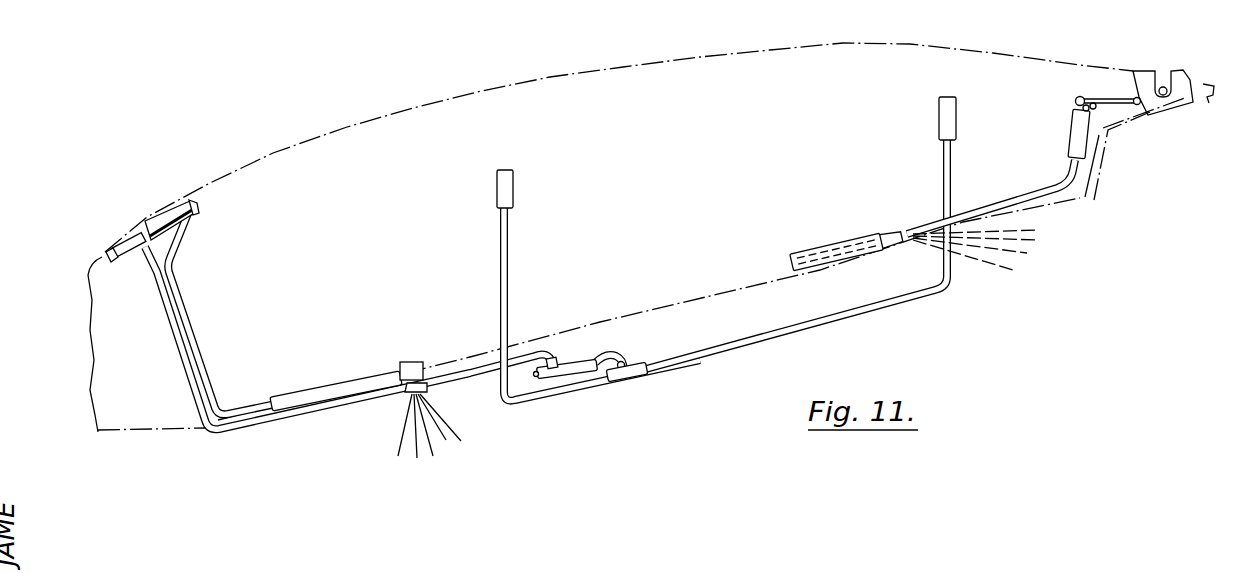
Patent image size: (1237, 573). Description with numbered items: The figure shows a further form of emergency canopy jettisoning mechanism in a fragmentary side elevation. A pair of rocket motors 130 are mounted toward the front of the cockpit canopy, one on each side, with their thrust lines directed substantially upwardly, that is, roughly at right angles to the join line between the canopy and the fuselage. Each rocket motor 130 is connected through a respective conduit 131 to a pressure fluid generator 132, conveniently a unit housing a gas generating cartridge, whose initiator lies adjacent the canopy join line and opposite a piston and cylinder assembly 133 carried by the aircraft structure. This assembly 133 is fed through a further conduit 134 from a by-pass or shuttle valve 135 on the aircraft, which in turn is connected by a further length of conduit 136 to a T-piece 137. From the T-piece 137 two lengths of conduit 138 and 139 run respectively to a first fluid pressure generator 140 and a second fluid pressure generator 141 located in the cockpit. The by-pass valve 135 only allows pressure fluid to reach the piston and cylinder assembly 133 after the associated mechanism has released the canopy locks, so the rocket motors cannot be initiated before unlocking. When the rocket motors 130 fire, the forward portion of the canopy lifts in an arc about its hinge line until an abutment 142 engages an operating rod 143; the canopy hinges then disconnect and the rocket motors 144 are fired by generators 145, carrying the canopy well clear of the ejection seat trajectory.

The rocket motor 130 is at (333, 388).
The conduit 131 is at (195, 343).
The pressure fluid generator 132 is at (166, 219).
The piston and cylinder assembly 133 is at (126, 242).
The further conduit 134 is at (173, 322).
The by-pass or shuttle valve 135 is at (572, 365).
The conduit 136 is at (608, 356).
The T-piece 137 is at (643, 368).
The conduit 138 is at (797, 330).
The conduit 139 is at (510, 404).
The first fluid pressure generator 140 is at (940, 115).
The second fluid pressure generator 141 is at (513, 189).
The abutment 142 is at (1151, 118).
The operating rod 143 is at (1119, 97).
The rocket motor 144 is at (828, 245).
The generator 145 is at (1078, 135).